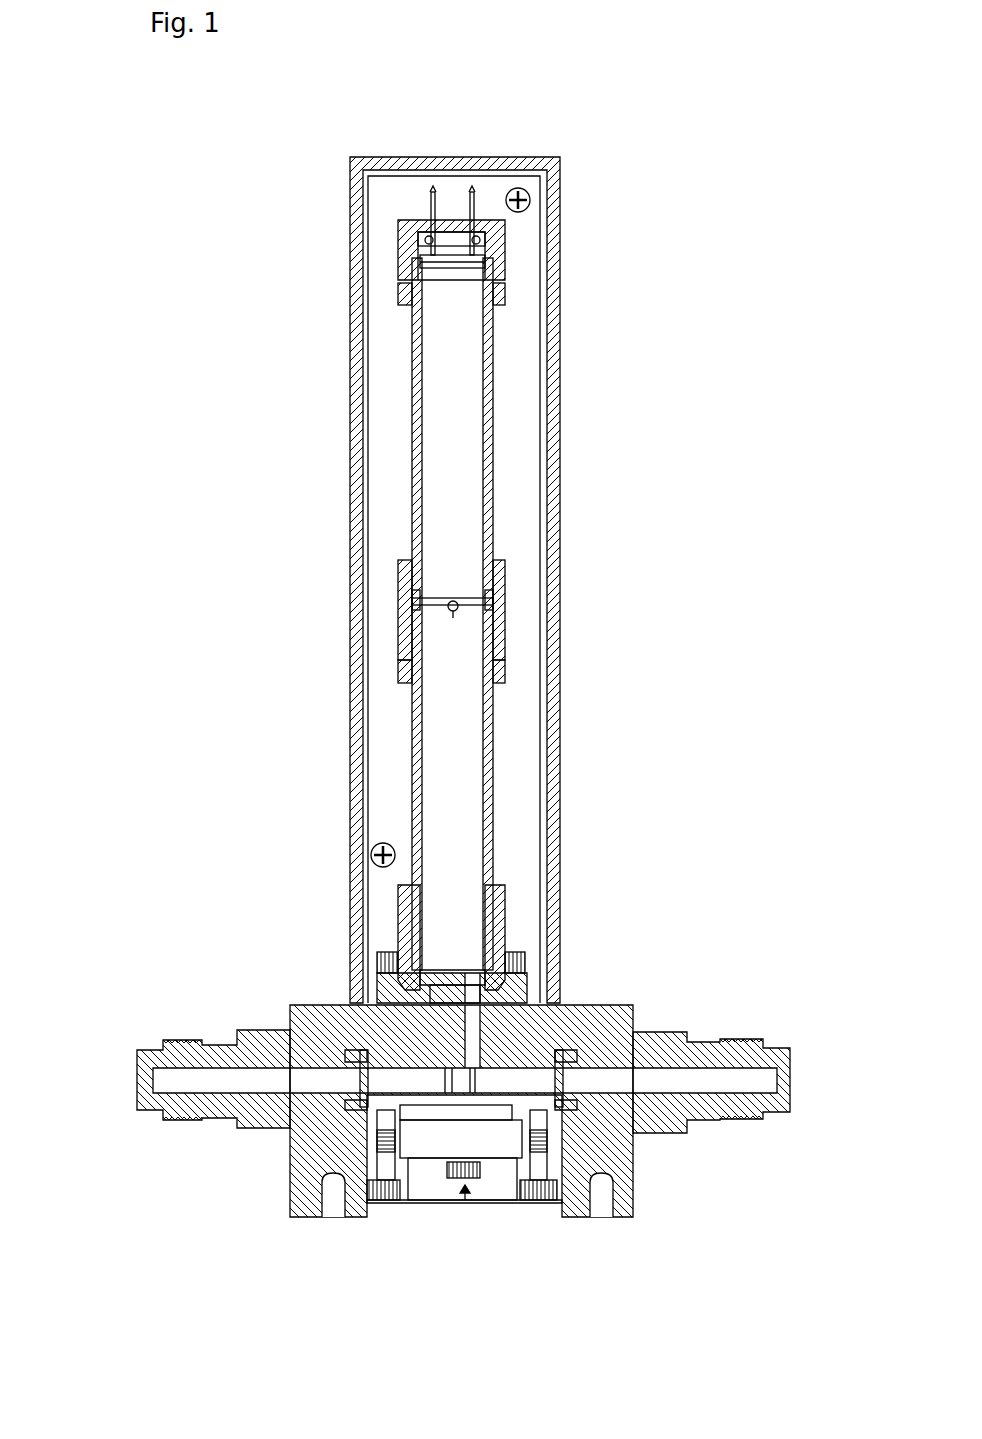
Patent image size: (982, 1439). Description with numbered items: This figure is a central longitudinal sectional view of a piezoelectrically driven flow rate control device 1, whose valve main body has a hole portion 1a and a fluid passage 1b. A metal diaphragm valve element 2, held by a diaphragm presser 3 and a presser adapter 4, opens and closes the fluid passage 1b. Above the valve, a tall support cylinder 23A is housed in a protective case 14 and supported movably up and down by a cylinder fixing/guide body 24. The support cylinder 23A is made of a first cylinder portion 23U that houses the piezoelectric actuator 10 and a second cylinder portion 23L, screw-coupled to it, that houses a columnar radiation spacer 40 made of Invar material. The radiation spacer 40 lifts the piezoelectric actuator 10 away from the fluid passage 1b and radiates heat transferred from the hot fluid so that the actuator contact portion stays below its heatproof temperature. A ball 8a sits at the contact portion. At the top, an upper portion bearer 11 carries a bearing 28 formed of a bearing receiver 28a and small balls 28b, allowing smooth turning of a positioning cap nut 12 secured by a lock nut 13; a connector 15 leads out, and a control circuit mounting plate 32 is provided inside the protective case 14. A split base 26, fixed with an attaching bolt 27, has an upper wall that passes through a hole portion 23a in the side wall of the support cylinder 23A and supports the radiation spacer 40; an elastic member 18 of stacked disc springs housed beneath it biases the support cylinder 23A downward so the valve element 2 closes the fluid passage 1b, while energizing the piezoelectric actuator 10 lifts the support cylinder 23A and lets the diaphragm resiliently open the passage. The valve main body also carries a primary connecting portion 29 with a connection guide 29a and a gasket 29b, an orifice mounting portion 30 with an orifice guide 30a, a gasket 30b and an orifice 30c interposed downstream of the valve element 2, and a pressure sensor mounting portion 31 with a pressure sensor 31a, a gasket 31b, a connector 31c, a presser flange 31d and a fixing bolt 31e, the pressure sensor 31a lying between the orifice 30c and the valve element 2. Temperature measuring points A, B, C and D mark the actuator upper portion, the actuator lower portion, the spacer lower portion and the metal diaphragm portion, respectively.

The piezoelectrically driven flow rate control device 1 is at (469, 1045).
The hole portion 1a is at (385, 992).
The fluid passage 1b is at (158, 1080).
The valve element 2 is at (470, 1068).
The diaphragm presser 3 is at (437, 1077).
The presser adapter 4 is at (585, 1008).
The ball 8a is at (455, 600).
The piezoelectric actuator 10 is at (488, 350).
The upper portion bearer 11 is at (448, 268).
The positioning cap nut 12 is at (398, 265).
The lock nut 13 is at (398, 292).
The protective case 14 is at (562, 197).
The connector 15 is at (458, 224).
The elastic member 18 is at (495, 1000).
The support cylinder 23A is at (584, 637).
The first cylinder portion 23U is at (493, 530).
The second cylinder portion 23L is at (582, 706).
The hole portion 23a is at (425, 978).
The cylinder fixing/guide body 24 is at (500, 912).
The split base 26 is at (515, 985).
The attaching bolt 27 is at (520, 960).
The bearing 28 is at (500, 240).
The bearing receiver 28a is at (408, 242).
The small balls 28b is at (483, 238).
The primary connecting portion 29 is at (260, 1101).
The connection guide 29a is at (348, 1048).
The gasket 29b is at (358, 1078).
The orifice mounting portion 30 is at (647, 1119).
The orifice guide 30a is at (600, 1046).
The gasket 30b is at (578, 1125).
The orifice 30c is at (568, 1078).
The pressure sensor mounting portion 31 is at (388, 1226).
The pressure sensor 31a is at (490, 1203).
The gasket 31b is at (508, 1203).
The connector 31c is at (430, 1203).
The presser flange 31d is at (377, 1150).
The fixing bolt 31e is at (390, 1203).
The control circuit mounting plate 32 is at (528, 243).
The radiation spacer 40 is at (460, 786).
The temperature measuring point A is at (398, 215).
The temperature measuring point B is at (412, 604).
The temperature measuring point C is at (352, 963).
The temperature measuring point D is at (365, 1004).